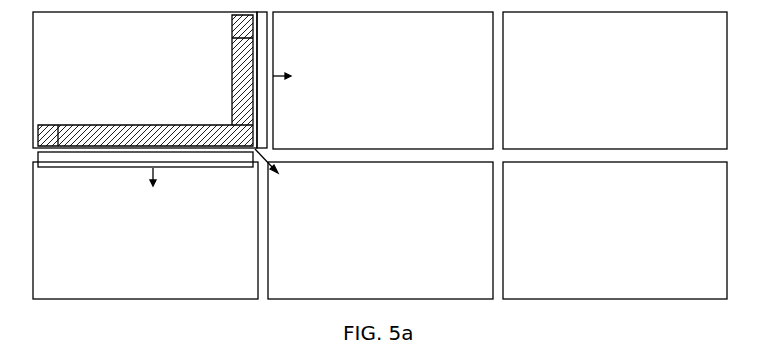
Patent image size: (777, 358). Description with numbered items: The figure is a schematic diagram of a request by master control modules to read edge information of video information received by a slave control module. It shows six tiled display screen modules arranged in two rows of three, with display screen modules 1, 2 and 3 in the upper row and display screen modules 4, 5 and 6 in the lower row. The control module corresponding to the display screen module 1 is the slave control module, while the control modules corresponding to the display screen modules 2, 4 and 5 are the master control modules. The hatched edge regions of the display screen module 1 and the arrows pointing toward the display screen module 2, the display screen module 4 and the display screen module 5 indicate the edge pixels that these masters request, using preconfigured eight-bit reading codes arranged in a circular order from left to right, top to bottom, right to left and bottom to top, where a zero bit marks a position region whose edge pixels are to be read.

The display screen module 1 is at (145, 80).
The display screen module 2 is at (383, 80).
The display screen module 3 is at (615, 80).
The display screen module 4 is at (145, 230).
The display screen module 5 is at (380, 230).
The display screen module 6 is at (615, 230).